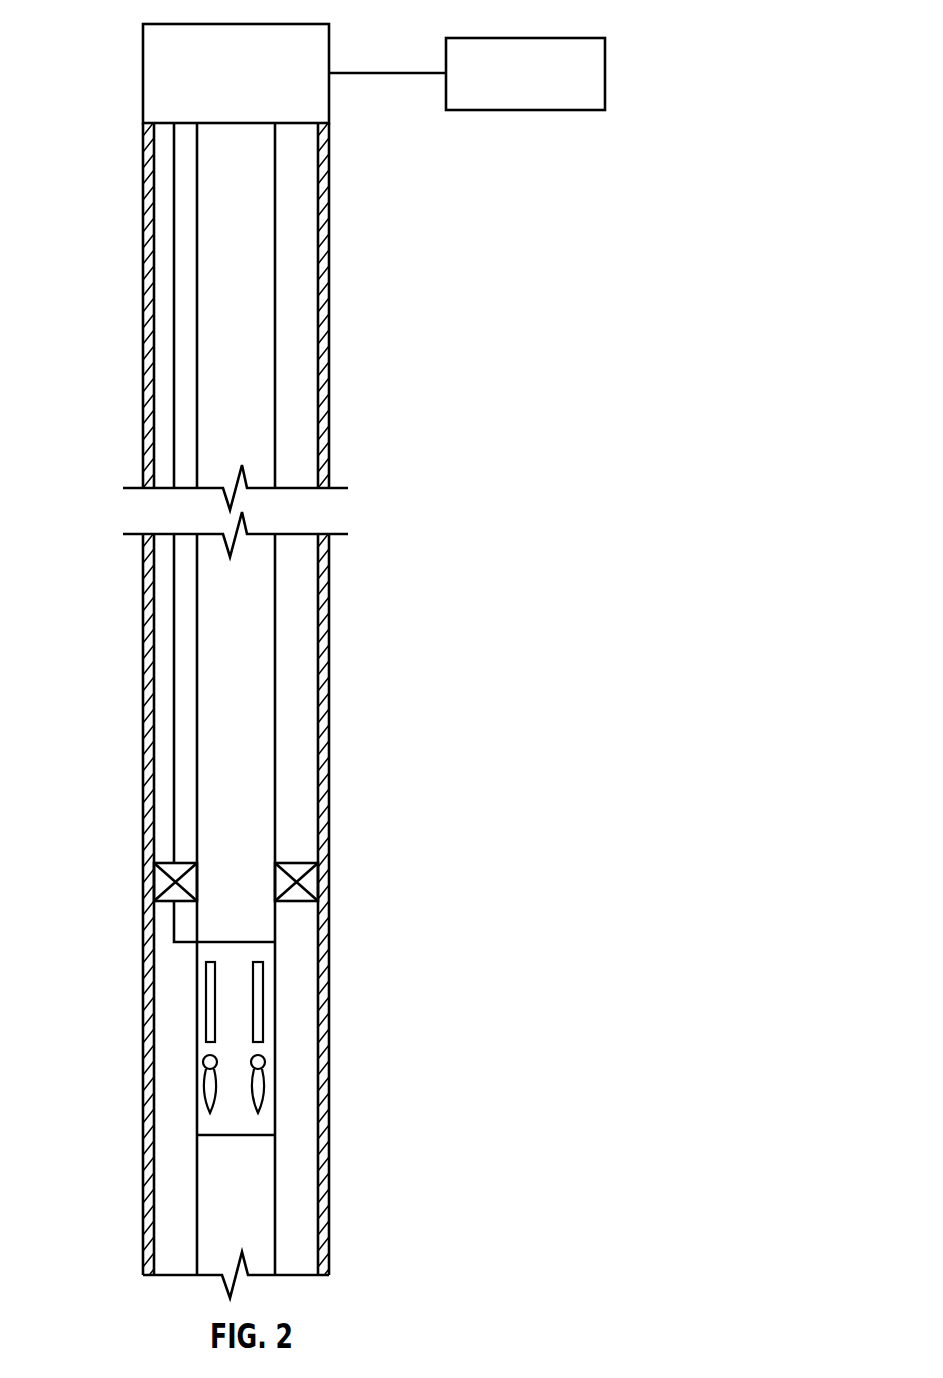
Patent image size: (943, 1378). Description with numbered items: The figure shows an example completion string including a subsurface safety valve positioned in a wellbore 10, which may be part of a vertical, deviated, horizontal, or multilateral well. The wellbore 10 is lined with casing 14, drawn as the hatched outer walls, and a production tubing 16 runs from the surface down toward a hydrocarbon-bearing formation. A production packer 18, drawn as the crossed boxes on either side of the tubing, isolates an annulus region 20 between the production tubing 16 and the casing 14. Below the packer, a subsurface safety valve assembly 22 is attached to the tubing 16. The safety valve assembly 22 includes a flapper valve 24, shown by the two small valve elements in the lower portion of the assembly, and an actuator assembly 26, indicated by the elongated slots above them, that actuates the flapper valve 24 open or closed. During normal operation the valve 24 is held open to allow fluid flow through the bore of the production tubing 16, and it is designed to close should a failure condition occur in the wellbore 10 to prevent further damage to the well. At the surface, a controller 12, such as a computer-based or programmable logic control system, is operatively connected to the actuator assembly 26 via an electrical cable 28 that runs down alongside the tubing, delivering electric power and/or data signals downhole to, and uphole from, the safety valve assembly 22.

The wellbore 10 is at (103, 50).
The controller 12 is at (533, 37).
The casing 14 is at (330, 323).
The production tubing 16 is at (260, 649).
The production packer 18 is at (307, 880).
The annulus region 20 is at (303, 668).
The subsurface safety valve assembly 22 is at (277, 975).
The flapper valve 24 is at (263, 1073).
The actuator assembly 26 is at (263, 1017).
The electrical cable 28 is at (173, 400).